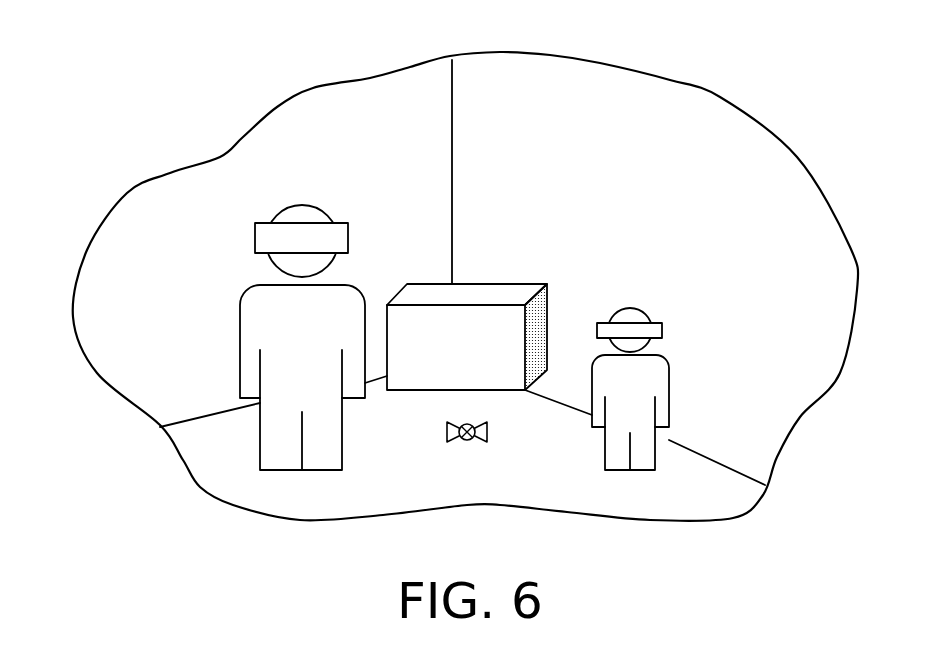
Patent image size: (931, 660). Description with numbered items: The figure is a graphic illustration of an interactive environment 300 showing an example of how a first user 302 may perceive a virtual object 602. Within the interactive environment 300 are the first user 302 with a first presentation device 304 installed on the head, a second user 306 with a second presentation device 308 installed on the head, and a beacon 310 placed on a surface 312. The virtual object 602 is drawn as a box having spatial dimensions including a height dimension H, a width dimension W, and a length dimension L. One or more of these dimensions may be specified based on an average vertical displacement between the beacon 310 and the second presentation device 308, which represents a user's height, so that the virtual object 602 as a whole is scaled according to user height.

The interactive environment 300 is at (367, 172).
The first user 302 is at (243, 350).
The first presentation device 304 is at (258, 252).
The second user 306 is at (667, 400).
The second presentation device 308 is at (655, 322).
The beacon 310 is at (462, 443).
The surface 312 is at (558, 478).
The virtual object 602 is at (510, 284).